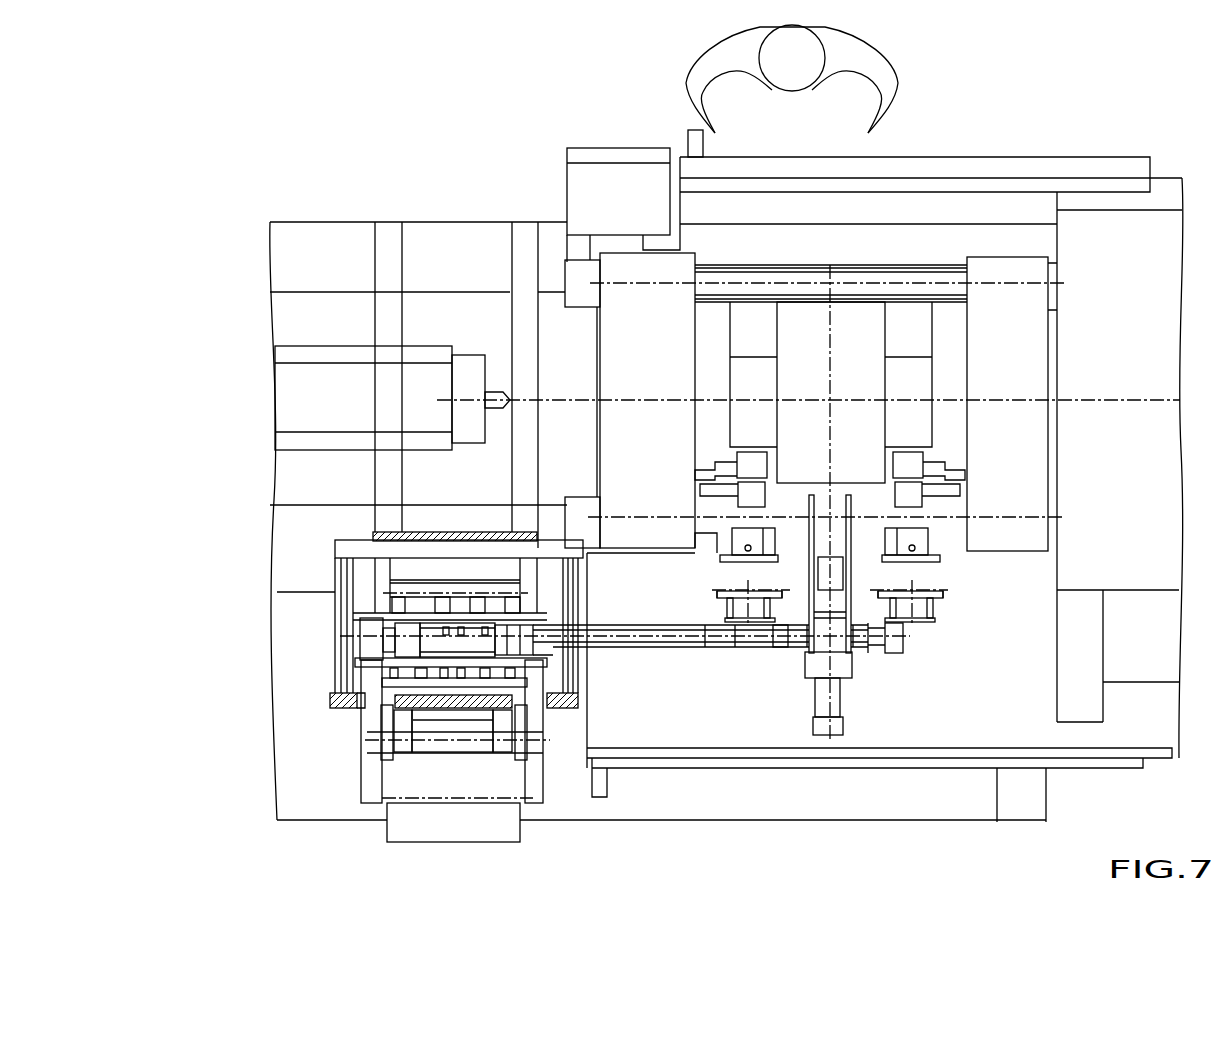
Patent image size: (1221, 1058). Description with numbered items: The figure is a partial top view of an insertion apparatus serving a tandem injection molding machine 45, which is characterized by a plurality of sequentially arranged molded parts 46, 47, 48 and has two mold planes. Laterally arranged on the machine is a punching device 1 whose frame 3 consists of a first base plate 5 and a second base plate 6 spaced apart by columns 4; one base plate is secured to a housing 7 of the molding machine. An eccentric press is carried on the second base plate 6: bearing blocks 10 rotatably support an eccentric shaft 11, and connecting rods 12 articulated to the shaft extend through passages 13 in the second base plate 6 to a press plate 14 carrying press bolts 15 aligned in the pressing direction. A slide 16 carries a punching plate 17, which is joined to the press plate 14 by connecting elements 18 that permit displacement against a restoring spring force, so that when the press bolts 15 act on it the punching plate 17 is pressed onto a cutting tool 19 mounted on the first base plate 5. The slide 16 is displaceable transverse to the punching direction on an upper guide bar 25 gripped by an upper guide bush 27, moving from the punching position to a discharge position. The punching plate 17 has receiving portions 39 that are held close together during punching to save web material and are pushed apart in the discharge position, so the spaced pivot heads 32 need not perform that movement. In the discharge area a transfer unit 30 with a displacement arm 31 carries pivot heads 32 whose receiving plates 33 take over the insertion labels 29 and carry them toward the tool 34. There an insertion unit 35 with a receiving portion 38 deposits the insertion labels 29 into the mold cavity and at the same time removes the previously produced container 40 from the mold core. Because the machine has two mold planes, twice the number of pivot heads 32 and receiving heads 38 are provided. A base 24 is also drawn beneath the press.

The punching device 1 is at (350, 732).
The frame 3 is at (320, 668).
The columns 4 is at (343, 616).
The first base plate 5 is at (485, 557).
The second base plate 6 is at (333, 700).
The housing 7 is at (432, 540).
The bearing blocks 10 is at (408, 757).
The eccentric shaft 11 is at (465, 733).
The connecting rods 12 is at (373, 725).
The passages 13 is at (348, 702).
The press plate 14 is at (432, 733).
The press bolts 15 is at (362, 650).
The slide 16 is at (775, 640).
The punching plate 17 is at (392, 595).
The connecting elements 18 is at (745, 622).
The cutting tool 19 is at (410, 567).
The base 24 is at (512, 822).
The upper guide bar 25 is at (652, 648).
The upper guide bush 27 is at (797, 655).
The insertion labels 29 is at (776, 590).
The transfer unit 30 is at (798, 500).
The displacement arm 31 is at (852, 517).
The pivot head 32 is at (738, 540).
The receiving plate 33 is at (720, 592).
The tool 34 is at (865, 262).
The insertion unit 35 is at (700, 468).
The receiving portion 38 is at (735, 495).
The receiving portions 39 is at (720, 615).
The container 40 is at (750, 463).
The tandem injection molding machine 45 is at (447, 218).
The molded part 46 is at (710, 340).
The molded part 47 is at (808, 333).
The molded part 48 is at (952, 337).